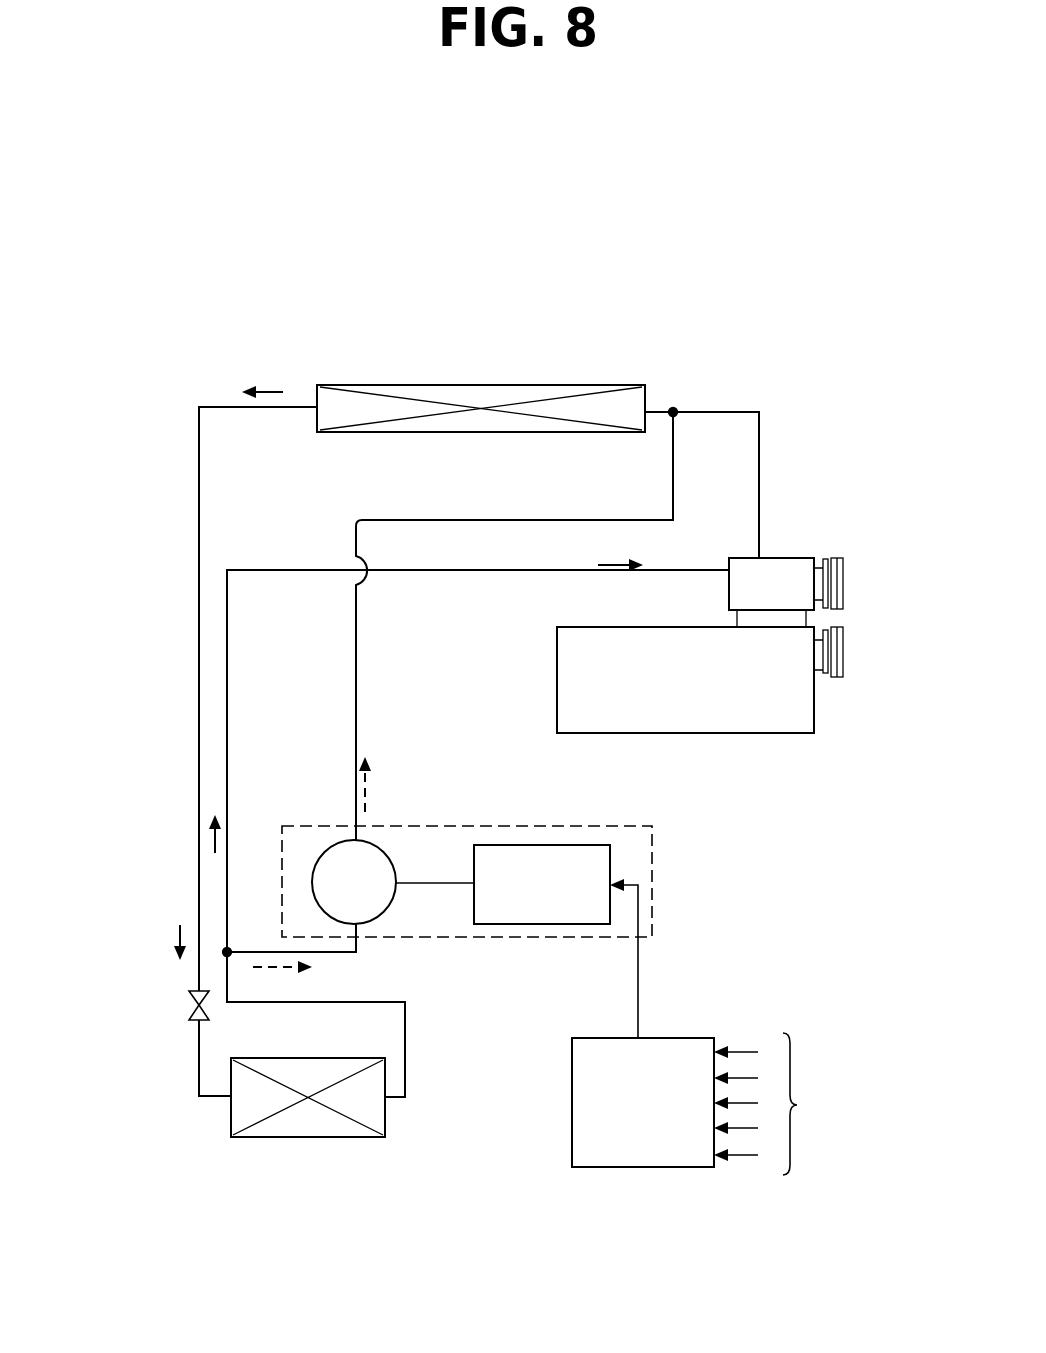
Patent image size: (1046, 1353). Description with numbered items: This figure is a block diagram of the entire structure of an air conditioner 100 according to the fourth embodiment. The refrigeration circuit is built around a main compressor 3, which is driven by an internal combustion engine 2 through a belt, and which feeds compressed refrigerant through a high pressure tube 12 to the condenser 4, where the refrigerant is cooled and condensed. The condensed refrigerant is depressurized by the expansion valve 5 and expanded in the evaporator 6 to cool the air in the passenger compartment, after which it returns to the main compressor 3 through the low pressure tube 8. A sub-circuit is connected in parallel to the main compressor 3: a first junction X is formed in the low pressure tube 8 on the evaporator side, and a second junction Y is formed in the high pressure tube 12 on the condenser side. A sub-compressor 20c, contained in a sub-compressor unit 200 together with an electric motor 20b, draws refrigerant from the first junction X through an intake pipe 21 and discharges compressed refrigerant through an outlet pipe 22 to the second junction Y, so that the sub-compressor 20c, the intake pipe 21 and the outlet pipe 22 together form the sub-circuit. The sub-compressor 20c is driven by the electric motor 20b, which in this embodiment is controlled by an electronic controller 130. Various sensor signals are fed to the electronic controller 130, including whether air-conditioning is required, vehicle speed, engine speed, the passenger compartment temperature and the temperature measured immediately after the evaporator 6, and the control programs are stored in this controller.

The air conditioner 100 is at (472, 336).
The condenser 4 is at (603, 408).
The second junction Y is at (674, 407).
The high pressure tube 12 is at (739, 407).
The main compressor 3 is at (792, 574).
The internal combustion engine 2 is at (758, 725).
The outlet pipe 22 is at (355, 622).
The low pressure tube 8 is at (227, 762).
The sub-compressor unit 200 is at (463, 810).
The sub-compressor 20c is at (335, 865).
The electric motor 20b is at (522, 855).
The intake pipe 21 is at (247, 950).
The first junction X is at (225, 953).
The expansion valve 5 is at (182, 1007).
The evaporator 6 is at (313, 1129).
The electronic controller 130 is at (605, 1157).